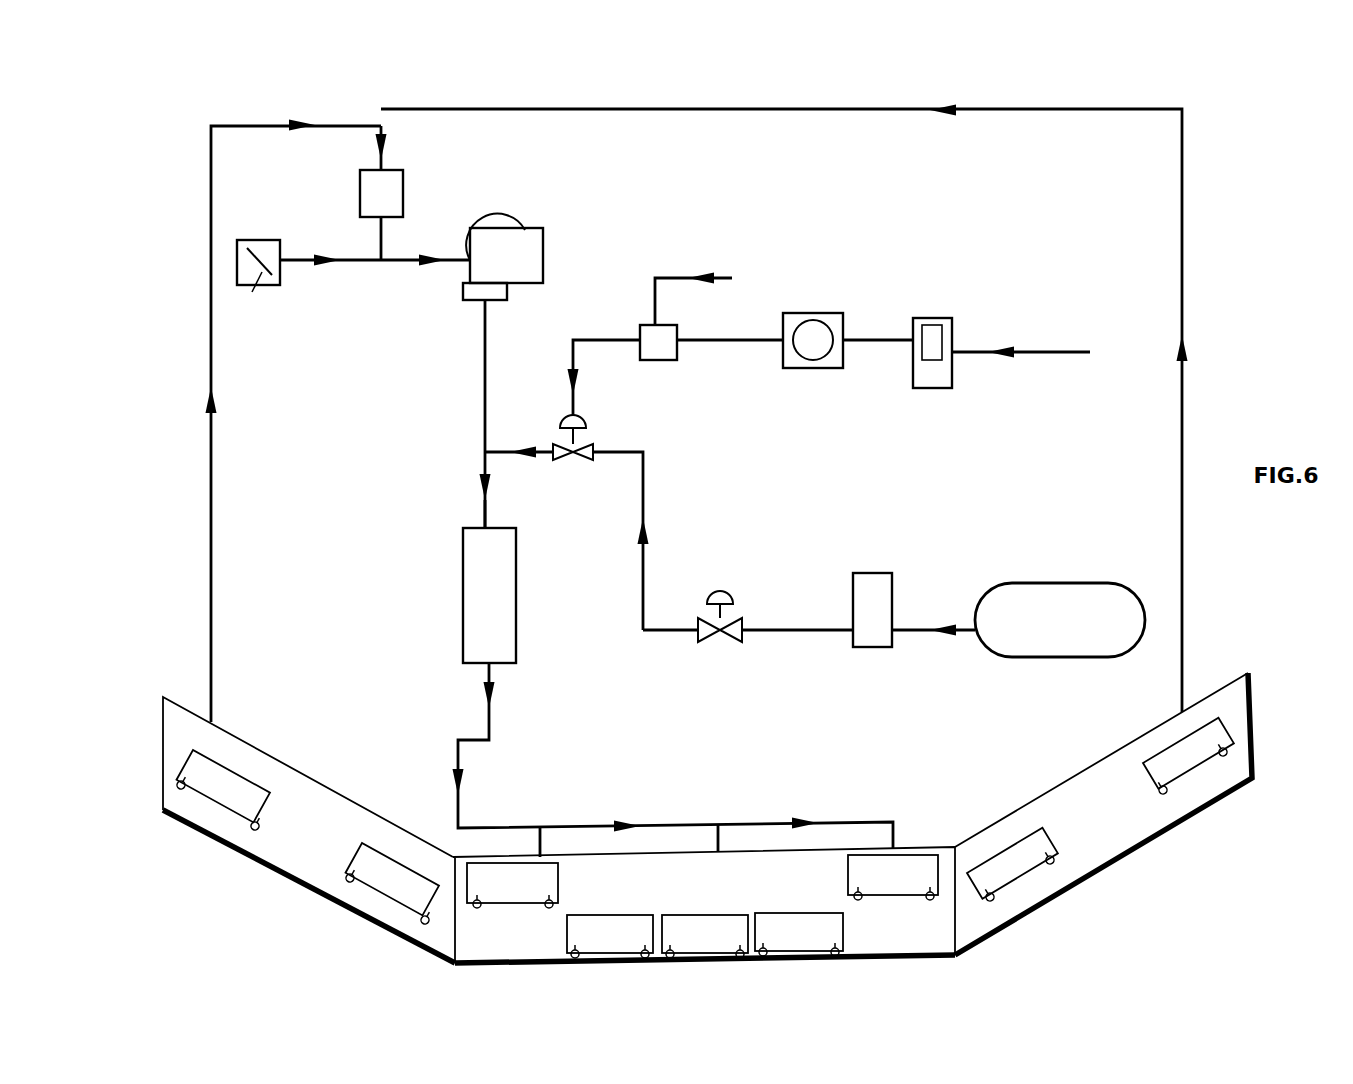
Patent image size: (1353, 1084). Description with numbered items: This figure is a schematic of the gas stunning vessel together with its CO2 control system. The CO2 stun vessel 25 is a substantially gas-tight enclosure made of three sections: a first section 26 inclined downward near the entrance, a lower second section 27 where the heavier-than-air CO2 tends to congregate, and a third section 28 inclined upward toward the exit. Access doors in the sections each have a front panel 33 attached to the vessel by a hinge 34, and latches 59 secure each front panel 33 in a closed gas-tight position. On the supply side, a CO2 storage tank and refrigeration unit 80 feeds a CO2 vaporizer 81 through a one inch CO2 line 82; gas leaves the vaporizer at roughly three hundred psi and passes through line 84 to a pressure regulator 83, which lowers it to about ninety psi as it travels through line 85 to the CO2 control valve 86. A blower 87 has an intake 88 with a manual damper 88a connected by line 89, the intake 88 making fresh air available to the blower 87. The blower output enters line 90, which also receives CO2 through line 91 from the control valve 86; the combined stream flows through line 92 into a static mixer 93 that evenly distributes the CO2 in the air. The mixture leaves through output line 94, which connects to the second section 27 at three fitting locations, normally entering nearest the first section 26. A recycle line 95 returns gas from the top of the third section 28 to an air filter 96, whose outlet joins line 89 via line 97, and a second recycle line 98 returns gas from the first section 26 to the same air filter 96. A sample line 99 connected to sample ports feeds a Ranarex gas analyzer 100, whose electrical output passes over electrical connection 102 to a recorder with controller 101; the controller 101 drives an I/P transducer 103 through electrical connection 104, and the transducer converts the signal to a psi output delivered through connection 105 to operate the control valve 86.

The CO2 stun vessel 25 is at (707, 818).
The first section 26 is at (1157, 823).
The second section 27 is at (697, 900).
The third section 28 is at (248, 851).
The front panel 33 is at (360, 862).
The hinge 34 is at (268, 795).
The latch 59 is at (181, 793).
The CO2 storage tank and refrigeration unit 80 is at (1050, 592).
The CO2 vaporizer 81 is at (885, 573).
The CO2 line 82 is at (958, 630).
The pressure regulator 83 is at (723, 590).
The line 84 is at (788, 630).
The line 85 is at (643, 498).
The CO2 control valve 86 is at (567, 417).
The blower 87 is at (533, 228).
The intake 88 is at (281, 273).
The manual damper 88a is at (247, 298).
The line 89 is at (372, 262).
The line 90 is at (485, 376).
The line 91 is at (545, 456).
The line 92 is at (484, 518).
The static mixer 93 is at (463, 596).
The output line 94 is at (489, 731).
The recycle line 95 is at (211, 590).
The air filter 96 is at (403, 190).
The line 97 is at (383, 236).
The recycle line 98 is at (1183, 591).
The sample line 99 is at (1023, 353).
The gas analyzer 100 is at (948, 320).
The recorder with controller 101 is at (843, 313).
The electrical connection 102 is at (877, 340).
The I/P transducer 103 is at (677, 325).
The electrical connection 104 is at (713, 340).
The connection 105 is at (579, 340).